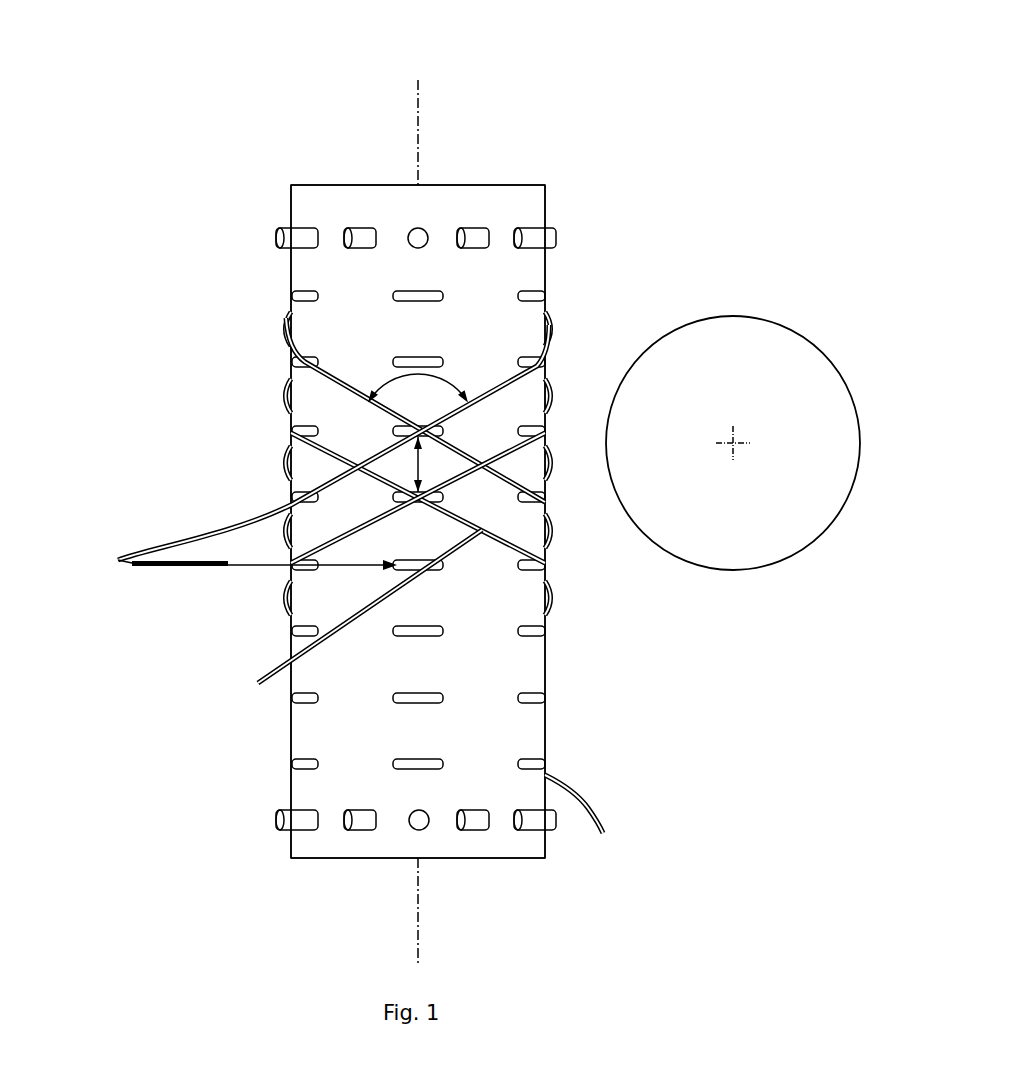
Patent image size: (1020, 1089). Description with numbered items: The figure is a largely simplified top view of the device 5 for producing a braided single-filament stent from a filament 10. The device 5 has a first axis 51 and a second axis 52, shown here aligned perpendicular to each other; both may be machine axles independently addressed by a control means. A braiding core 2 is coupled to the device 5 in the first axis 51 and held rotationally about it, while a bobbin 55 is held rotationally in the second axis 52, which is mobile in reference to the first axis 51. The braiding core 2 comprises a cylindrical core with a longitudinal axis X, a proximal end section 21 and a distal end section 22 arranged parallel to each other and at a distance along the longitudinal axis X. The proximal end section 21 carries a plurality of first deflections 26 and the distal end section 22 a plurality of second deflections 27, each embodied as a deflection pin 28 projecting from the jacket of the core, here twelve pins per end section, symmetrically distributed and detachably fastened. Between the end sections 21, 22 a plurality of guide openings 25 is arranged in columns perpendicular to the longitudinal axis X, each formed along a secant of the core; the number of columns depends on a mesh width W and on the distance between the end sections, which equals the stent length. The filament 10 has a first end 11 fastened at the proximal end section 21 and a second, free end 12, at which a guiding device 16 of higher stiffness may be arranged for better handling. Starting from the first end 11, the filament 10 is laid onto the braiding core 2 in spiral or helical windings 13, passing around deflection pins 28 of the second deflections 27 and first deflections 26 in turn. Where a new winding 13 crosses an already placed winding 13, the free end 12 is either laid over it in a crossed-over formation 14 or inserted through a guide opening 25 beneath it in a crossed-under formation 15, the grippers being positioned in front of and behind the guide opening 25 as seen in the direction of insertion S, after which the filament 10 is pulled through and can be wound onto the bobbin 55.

The braiding core 2 is at (200, 447).
The device 5 is at (328, 121).
The filament 10 is at (596, 568).
The first end 11 is at (605, 828).
The second end 12 is at (222, 570).
The winding 13 is at (462, 546).
The crossed-over formation 14 is at (487, 458).
The crossed-under formation 15 is at (547, 363).
The guiding device 16 is at (185, 567).
The proximal end section 21 is at (507, 838).
The distal end section 22 is at (487, 207).
The guide opening 25 is at (410, 297).
The first deflection 26 is at (295, 818).
The second deflection 27 is at (538, 235).
The deflection pin 28 is at (413, 504).
The first axis 51 is at (312, 535).
The second axis 52 is at (737, 442).
The bobbin 55 is at (733, 337).
The direction of insertion S is at (338, 563).
The mesh width W is at (418, 463).
The longitudinal axis X is at (420, 902).